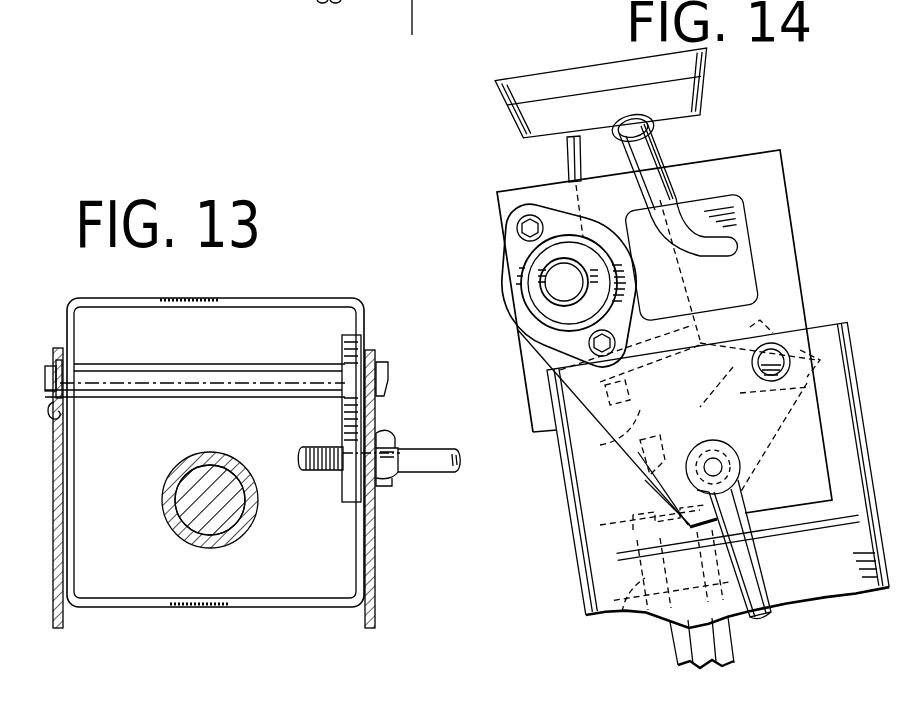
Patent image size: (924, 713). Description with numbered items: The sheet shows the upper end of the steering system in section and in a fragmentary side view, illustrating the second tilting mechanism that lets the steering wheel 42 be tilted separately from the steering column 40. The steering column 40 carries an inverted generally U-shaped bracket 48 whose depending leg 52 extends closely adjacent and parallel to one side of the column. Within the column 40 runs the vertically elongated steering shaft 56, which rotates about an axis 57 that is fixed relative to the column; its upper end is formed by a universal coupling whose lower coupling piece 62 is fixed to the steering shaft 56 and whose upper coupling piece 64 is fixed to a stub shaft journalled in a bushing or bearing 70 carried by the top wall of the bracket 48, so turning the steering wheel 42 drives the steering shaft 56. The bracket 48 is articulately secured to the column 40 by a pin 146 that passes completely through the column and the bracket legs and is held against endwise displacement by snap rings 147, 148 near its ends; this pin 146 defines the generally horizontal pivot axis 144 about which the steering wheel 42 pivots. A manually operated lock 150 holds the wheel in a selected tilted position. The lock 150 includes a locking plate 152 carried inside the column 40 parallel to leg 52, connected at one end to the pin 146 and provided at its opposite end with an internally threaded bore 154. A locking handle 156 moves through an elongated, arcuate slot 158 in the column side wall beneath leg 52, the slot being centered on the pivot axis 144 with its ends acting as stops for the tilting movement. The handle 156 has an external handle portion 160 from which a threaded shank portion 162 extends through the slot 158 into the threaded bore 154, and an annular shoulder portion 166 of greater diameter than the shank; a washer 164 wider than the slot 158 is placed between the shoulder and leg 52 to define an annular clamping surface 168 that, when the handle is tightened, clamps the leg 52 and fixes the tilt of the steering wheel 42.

In FIG. 13, the steering column 40 is at (129, 296).
In FIG. 14, the steering column 40 is at (573, 569).
In FIG. 14, the steering wheel 42 is at (511, 131).
In FIG. 13, the bracket 48 is at (53, 532).
In FIG. 14, the bracket 48 is at (794, 210).
In FIG. 13, the second leg 52 is at (373, 603).
In FIG. 14, the second leg 52 is at (808, 495).
In FIG. 13, the steering shaft 56 is at (194, 474).
In FIG. 14, the steering shaft 56 is at (708, 653).
In FIG. 14, the axis 57 is at (413, 6).
In FIG. 14, the lower coupling piece 62 is at (627, 612).
In FIG. 13, the upper coupling piece 64 is at (243, 460).
In FIG. 14, the upper coupling piece 64 is at (585, 458).
In FIG. 14, the bushing or bearing 70 is at (568, 163).
In FIG. 13, the pivot axis 144 is at (100, 386).
In FIG. 13, the pin 146 is at (335, 375).
In FIG. 14, the pin 146 is at (776, 360).
In FIG. 13, the snap ring 147 is at (60, 408).
In FIG. 13, the snap ring 148 is at (378, 370).
In FIG. 13, the lock 150 is at (446, 462).
In FIG. 14, the lock 150 is at (756, 530).
In FIG. 13, the locking plate 152 is at (342, 344).
In FIG. 14, the locking plate 152 is at (757, 427).
In FIG. 13, the threaded bore 154 is at (344, 452).
In FIG. 13, the locking handle 156 is at (444, 478).
In FIG. 14, the slot 158 is at (642, 482).
In FIG. 13, the handle portion 160 is at (459, 468).
In FIG. 13, the shank portion 162 is at (312, 471).
In FIG. 13, the washer 164 is at (382, 444).
In FIG. 13, the shoulder portion 166 is at (392, 480).
In FIG. 13, the clamping surface 168 is at (400, 456).